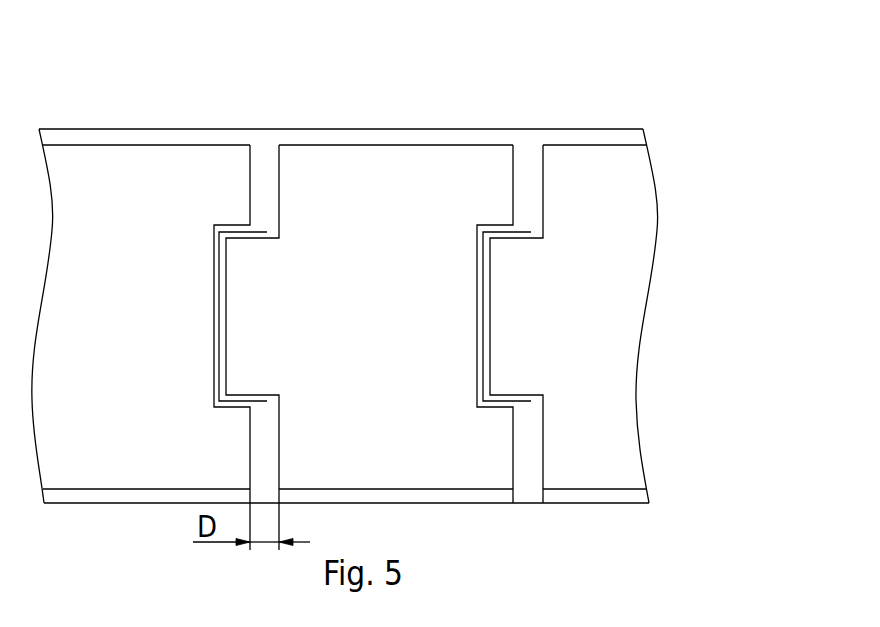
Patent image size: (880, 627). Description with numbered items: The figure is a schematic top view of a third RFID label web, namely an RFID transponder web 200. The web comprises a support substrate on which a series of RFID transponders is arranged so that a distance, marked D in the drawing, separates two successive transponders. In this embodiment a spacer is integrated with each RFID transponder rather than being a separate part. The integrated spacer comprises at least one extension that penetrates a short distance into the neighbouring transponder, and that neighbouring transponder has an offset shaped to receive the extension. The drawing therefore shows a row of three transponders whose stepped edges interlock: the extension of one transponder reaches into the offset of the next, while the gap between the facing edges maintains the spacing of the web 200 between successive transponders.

The RFID transponder web 200 is at (398, 282).